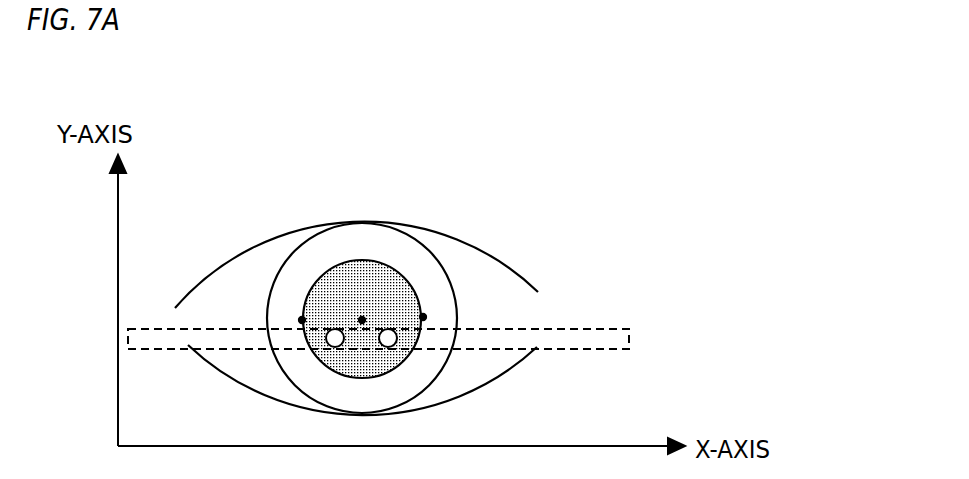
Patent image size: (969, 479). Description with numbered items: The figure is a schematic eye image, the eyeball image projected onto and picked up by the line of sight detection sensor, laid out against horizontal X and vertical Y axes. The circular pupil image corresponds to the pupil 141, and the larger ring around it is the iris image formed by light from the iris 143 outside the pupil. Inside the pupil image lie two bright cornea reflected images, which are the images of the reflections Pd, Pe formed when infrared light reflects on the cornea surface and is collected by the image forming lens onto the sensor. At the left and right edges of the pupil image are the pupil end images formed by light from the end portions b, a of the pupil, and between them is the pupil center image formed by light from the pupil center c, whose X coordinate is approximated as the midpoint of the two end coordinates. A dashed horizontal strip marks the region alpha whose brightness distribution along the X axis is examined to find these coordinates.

The pupil 141 is at (397, 292).
The iris 143 is at (420, 275).
The cornea reflected image Pd is at (330, 329).
The cornea reflected image Pe is at (383, 329).
The pupil center c is at (362, 320).
The pupil end portion b is at (302, 320).
The pupil end portion a is at (423, 317).
The region alpha is at (582, 329).